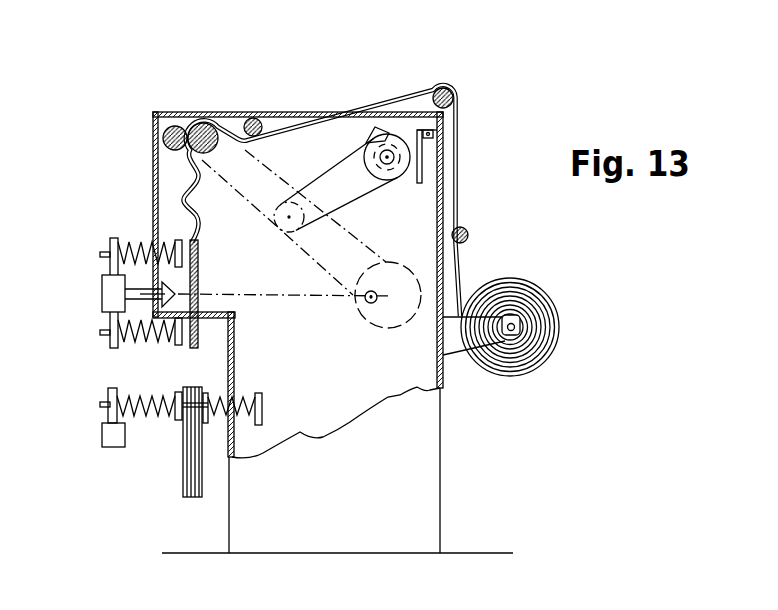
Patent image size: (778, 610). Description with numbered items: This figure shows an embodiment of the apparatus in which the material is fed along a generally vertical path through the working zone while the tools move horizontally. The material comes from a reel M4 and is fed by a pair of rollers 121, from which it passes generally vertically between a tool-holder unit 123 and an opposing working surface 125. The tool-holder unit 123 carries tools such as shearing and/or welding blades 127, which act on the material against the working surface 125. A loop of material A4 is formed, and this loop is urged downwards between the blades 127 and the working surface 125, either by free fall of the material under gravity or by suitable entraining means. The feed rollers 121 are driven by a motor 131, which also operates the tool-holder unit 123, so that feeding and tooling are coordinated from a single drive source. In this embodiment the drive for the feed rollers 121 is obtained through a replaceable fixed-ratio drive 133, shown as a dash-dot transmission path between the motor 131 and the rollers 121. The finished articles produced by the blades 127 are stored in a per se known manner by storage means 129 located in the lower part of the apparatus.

The feed rollers 121 is at (211, 123).
The loop of material A4 is at (173, 193).
The tool-holder unit 123 is at (99, 291).
The working surface 125 is at (199, 246).
The shearing and/or welding blades 127 is at (176, 292).
The storage means 129 is at (208, 434).
The motor 131 is at (400, 180).
The replaceable fixed-ratio drive 133 is at (302, 269).
The reel M4 is at (510, 288).